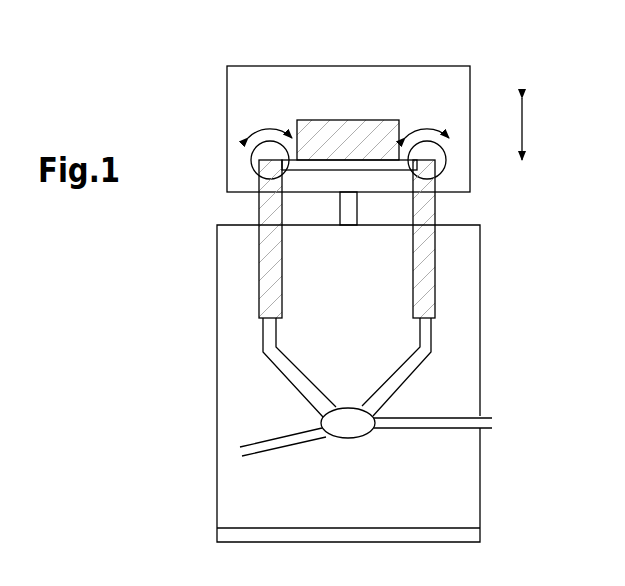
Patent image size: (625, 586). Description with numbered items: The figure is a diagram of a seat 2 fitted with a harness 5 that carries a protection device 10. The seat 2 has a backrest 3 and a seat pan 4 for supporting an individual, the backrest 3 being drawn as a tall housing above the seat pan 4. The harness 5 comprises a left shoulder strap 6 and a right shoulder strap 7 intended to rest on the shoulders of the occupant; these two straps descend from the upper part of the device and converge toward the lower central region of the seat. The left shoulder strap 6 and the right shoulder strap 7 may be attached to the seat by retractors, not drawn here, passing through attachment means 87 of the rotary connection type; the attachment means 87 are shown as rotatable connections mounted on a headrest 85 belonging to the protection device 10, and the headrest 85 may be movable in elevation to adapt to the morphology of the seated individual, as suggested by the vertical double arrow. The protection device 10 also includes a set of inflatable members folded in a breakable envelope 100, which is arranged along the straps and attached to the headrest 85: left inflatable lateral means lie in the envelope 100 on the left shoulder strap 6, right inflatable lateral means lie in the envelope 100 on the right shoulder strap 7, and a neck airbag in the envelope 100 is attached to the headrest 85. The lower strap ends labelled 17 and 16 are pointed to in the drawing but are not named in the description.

The seat 2 is at (489, 386).
The backrest 3 is at (481, 288).
The seat pan 4 is at (481, 536).
The harness 5 is at (270, 392).
The left shoulder strap 6 is at (420, 340).
The right shoulder strap 7 is at (277, 336).
The protection device 10 is at (230, 207).
The second piston end 16 is at (437, 324).
The first piston end 17 is at (255, 323).
The headrest 85 is at (470, 82).
The attachment means 87 is at (252, 160).
The breakable envelope 100 is at (437, 208).